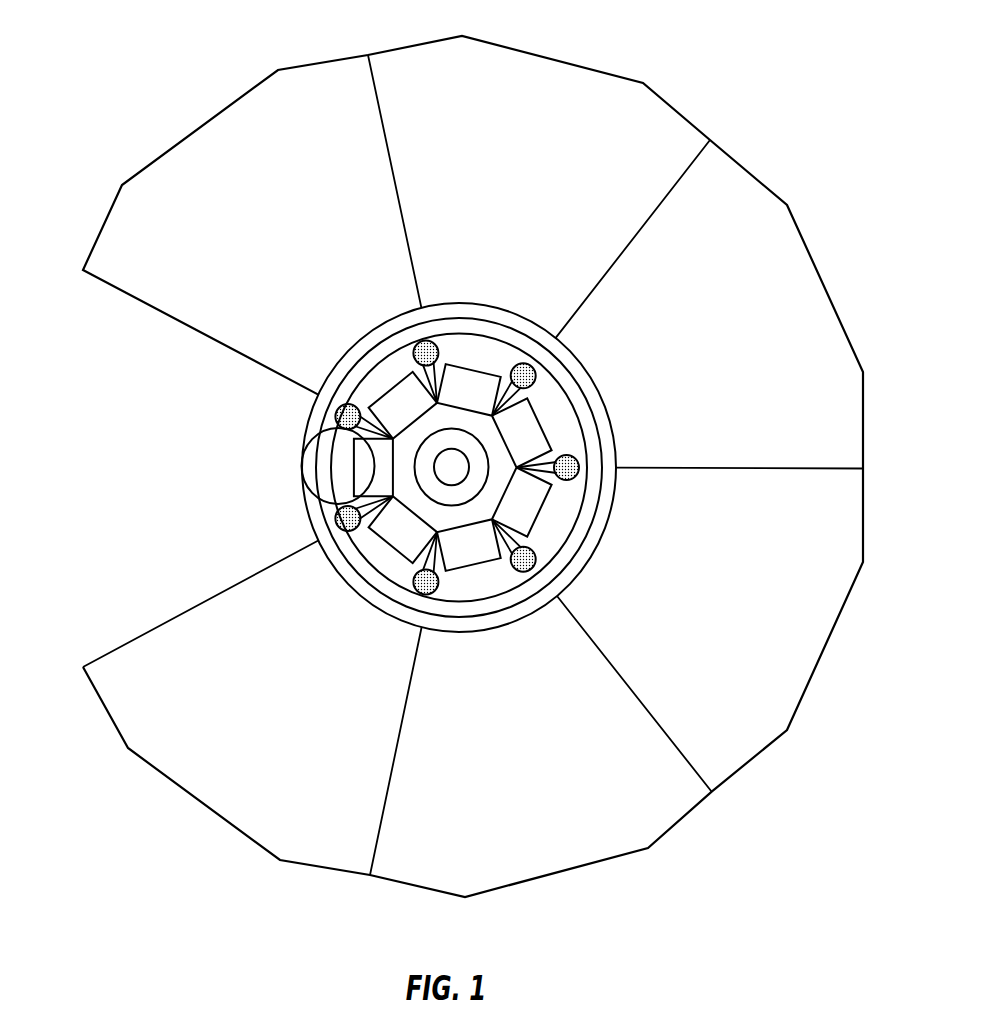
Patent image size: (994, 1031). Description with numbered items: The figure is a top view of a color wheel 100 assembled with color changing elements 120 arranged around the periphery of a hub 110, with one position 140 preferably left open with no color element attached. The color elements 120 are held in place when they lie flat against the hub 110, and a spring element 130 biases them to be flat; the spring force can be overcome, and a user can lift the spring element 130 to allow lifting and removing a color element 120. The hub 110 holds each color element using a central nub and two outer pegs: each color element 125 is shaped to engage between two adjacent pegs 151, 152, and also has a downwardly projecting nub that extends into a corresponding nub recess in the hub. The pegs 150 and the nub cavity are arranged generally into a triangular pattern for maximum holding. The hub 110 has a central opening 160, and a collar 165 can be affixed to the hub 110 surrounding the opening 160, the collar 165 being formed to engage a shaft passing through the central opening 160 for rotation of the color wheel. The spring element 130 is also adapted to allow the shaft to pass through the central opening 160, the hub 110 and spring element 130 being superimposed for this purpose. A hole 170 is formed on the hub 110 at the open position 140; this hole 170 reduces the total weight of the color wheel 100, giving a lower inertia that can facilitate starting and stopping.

The color wheel 100 is at (42, 29).
The hub 110 is at (313, 427).
The color changing elements 120 is at (795, 248).
The color element 125 is at (198, 138).
The spring element 130 is at (390, 528).
The open position 140 is at (91, 445).
The pegs 150 is at (536, 372).
The peg 151 is at (423, 342).
The peg 152 is at (338, 400).
The central opening 160 is at (455, 458).
The collar 165 is at (478, 475).
The hole 170 is at (321, 481).